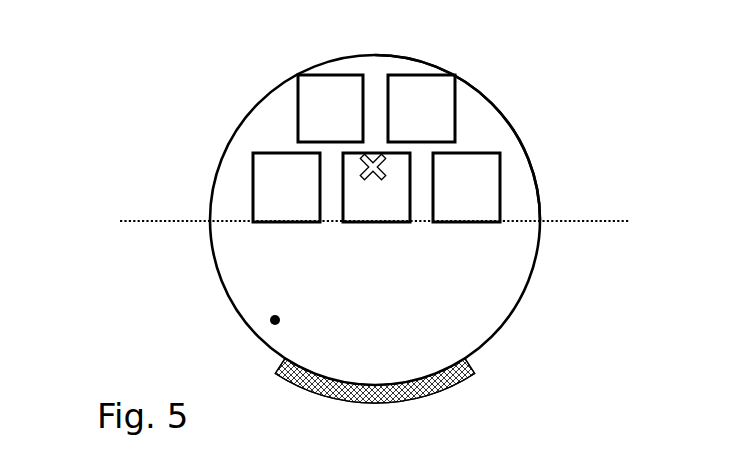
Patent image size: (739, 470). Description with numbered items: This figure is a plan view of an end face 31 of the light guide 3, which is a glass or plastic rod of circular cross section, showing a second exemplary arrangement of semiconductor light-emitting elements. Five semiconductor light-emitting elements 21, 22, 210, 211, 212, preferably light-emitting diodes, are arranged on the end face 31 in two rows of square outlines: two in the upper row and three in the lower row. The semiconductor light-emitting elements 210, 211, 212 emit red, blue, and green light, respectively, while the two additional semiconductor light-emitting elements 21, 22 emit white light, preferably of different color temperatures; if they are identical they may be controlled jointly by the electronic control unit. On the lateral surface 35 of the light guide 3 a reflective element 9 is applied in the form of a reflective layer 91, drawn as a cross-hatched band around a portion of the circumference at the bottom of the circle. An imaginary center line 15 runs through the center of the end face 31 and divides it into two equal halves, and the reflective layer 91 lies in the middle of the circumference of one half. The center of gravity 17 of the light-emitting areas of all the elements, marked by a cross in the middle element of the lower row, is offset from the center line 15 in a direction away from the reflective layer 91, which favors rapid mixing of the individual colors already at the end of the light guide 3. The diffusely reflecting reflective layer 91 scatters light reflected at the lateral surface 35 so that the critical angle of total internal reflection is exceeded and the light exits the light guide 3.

The light guide 3 is at (566, 268).
The center line 15 is at (145, 221).
The center of gravity 17 is at (387, 165).
The semiconductor light-emitting element 21 is at (253, 197).
The semiconductor light-emitting element 22 is at (503, 182).
The end face 31 is at (275, 320).
The lateral surface 35 is at (508, 317).
The semiconductor light-emitting element 210 is at (298, 120).
The semiconductor light-emitting element 211 is at (352, 222).
The semiconductor light-emitting element 212 is at (456, 107).
The reflective element 9 is at (413, 402).
The reflective layer 91 is at (530, 420).